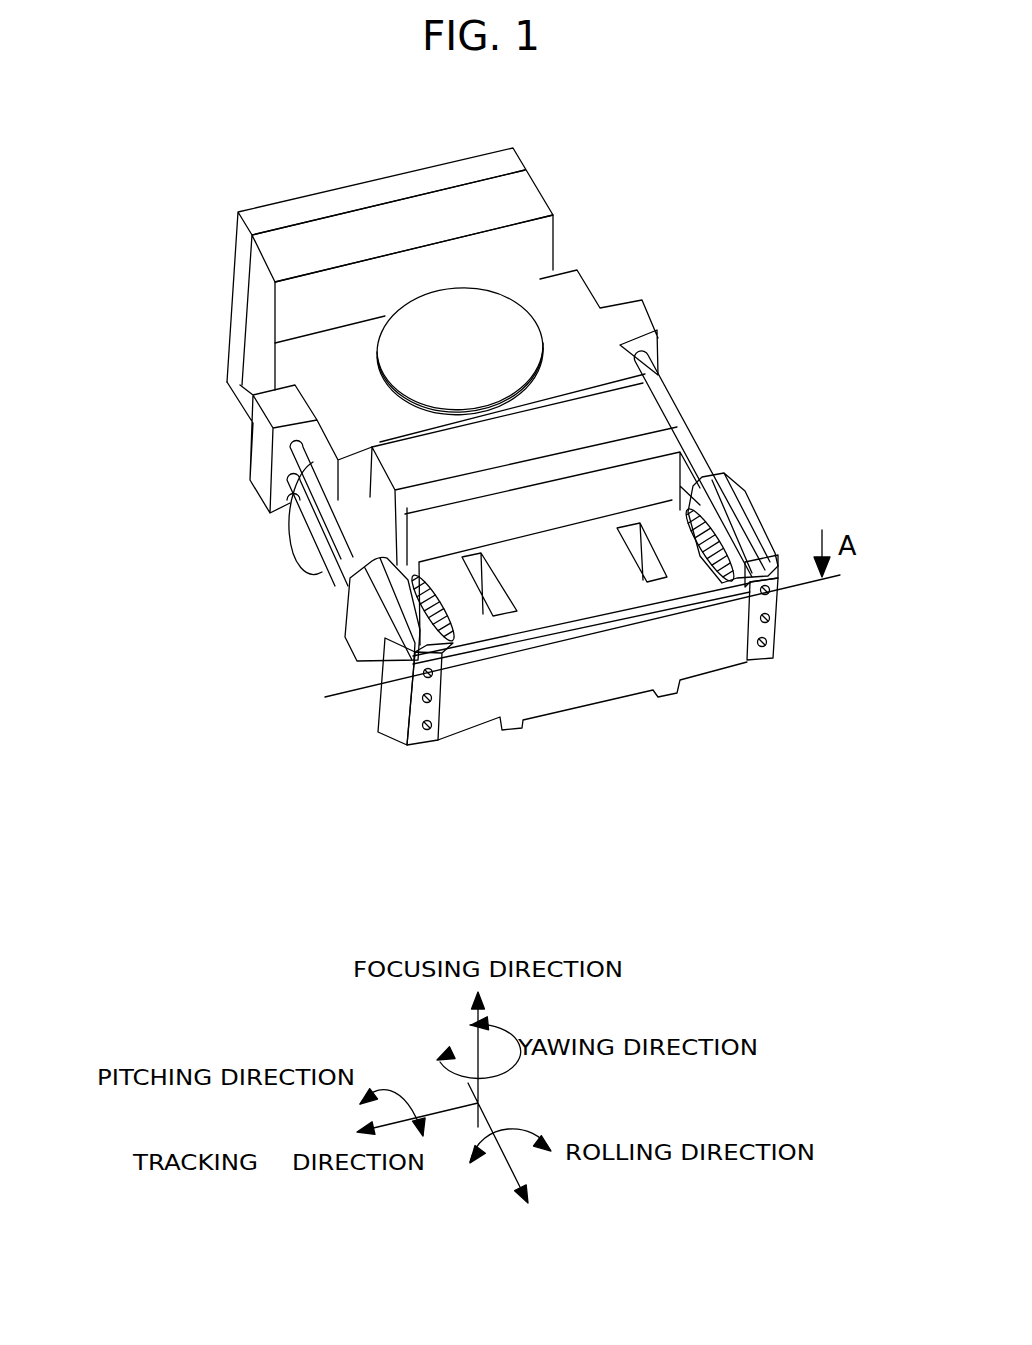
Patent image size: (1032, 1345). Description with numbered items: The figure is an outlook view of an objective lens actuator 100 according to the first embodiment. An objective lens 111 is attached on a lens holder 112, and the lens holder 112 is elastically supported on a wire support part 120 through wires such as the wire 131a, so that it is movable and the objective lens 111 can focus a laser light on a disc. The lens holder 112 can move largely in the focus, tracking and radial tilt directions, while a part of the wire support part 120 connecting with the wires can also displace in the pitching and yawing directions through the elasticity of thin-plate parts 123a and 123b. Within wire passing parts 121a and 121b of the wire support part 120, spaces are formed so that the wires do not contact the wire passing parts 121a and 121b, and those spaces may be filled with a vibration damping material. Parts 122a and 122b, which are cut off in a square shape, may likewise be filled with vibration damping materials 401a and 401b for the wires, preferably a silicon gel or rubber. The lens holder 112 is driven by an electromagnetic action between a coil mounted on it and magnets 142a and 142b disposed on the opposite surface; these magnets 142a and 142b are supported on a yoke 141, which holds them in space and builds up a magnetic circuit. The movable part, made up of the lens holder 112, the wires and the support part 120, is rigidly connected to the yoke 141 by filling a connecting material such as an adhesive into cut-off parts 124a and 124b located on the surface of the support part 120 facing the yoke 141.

The objective lens actuator 100 is at (63, 432).
The objective lens 111 is at (500, 330).
The lens holder 112 is at (622, 322).
The wire support part 120 is at (603, 683).
The wire passing part 121a is at (370, 593).
The wire passing part 121b is at (738, 522).
The square cut-off part 122a is at (383, 705).
The square cut-off part 122b is at (775, 560).
The thin-plate part 123a is at (475, 725).
The thin-plate part 123b is at (780, 613).
The cut-off part 124a is at (500, 625).
The cut-off part 124b is at (652, 582).
The wire 131a is at (297, 563).
The yoke 141 is at (505, 158).
The magnet 142a is at (520, 205).
The magnet 142b is at (640, 410).
The vibration damping material 401a is at (450, 636).
The vibration damping material 401b is at (742, 497).